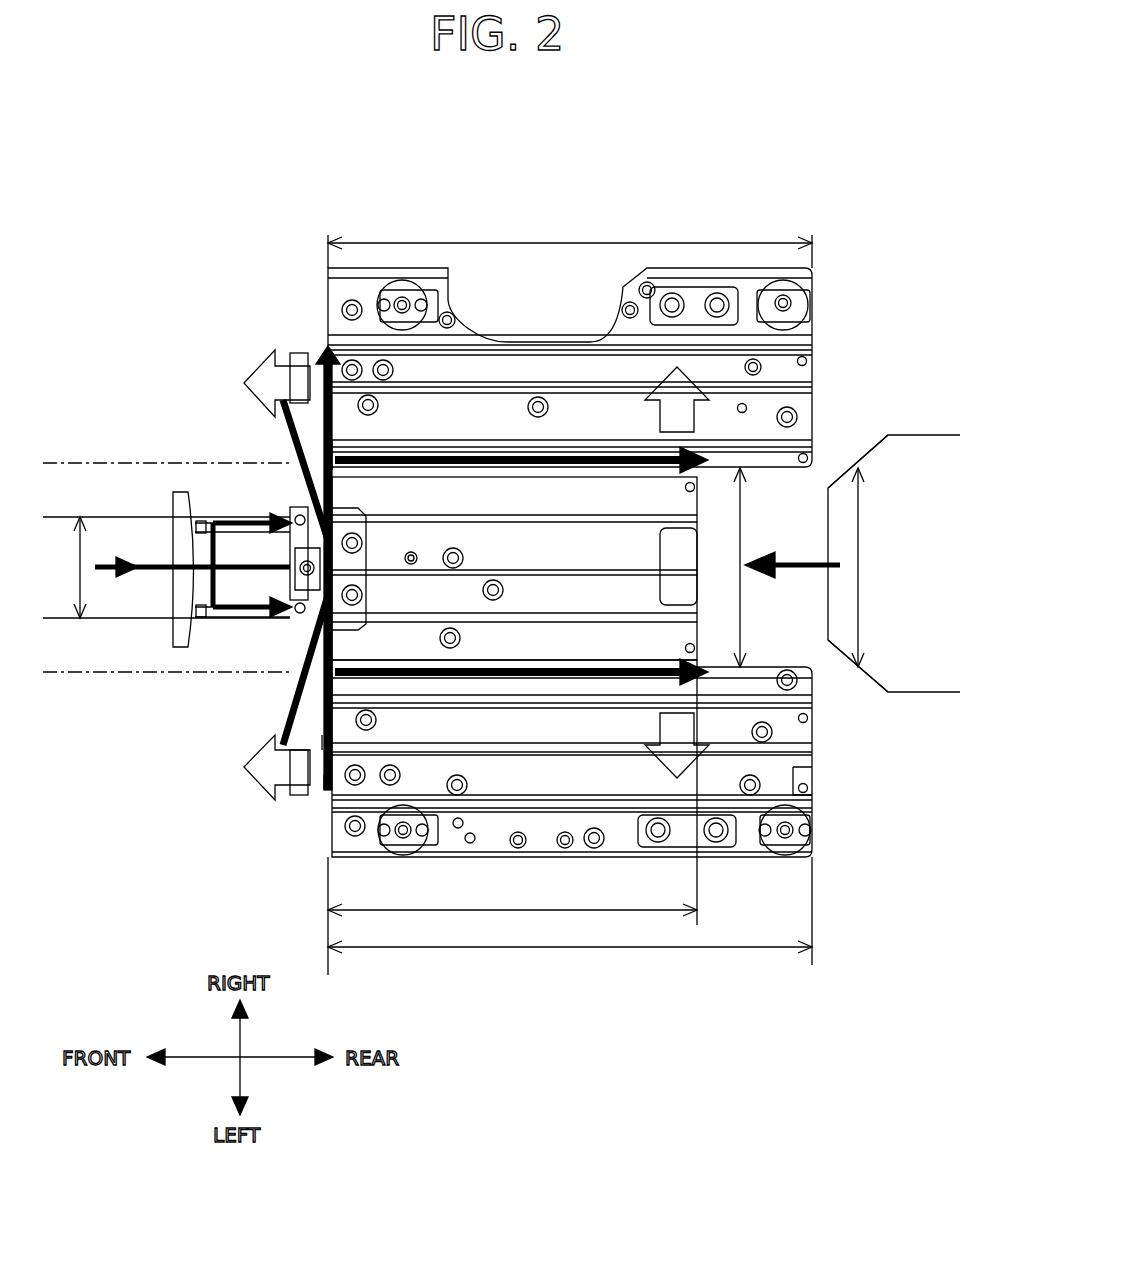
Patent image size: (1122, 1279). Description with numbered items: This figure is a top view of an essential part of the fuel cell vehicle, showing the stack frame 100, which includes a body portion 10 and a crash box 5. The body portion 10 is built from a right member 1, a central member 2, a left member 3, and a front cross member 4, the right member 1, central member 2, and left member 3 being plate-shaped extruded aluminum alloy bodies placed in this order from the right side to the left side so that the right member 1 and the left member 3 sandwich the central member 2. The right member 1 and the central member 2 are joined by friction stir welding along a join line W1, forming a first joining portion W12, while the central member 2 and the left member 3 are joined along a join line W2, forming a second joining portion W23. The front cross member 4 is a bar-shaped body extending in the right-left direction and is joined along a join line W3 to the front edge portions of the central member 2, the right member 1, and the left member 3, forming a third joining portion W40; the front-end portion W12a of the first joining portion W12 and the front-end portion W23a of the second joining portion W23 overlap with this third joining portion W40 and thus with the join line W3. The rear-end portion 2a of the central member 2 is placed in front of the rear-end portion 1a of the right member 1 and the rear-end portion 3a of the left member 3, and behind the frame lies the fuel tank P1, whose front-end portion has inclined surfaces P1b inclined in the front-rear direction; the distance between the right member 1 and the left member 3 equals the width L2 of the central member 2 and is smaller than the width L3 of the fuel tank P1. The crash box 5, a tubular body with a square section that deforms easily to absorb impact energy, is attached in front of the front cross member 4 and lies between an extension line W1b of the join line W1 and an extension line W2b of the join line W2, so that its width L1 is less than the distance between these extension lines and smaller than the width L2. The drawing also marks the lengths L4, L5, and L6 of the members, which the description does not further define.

The stack frame 100 is at (700, 158).
The body portion 10 is at (812, 283).
The right member 1 is at (812, 300).
The rear-end portion of the right member 1a is at (812, 360).
The central member 2 is at (675, 595).
The rear-end portion of the central member 2a is at (697, 560).
The left member 3 is at (812, 830).
The rear-end portion of the left member 3a is at (812, 792).
The front cross member 4 is at (290, 485).
The crash box 5 is at (185, 592).
The fuel tank P1 is at (905, 435).
The inclined surfaces P1b is at (855, 465).
The join line W1 is at (582, 458).
The extension line of the join line W1 W1b is at (166, 450).
The first joining portion W12 is at (548, 458).
The front-end portion of the first joining portion W12a is at (338, 465).
The join line W2 is at (567, 670).
The extension line of the join line W2 W2b is at (166, 687).
The second joining portion W23 is at (548, 670).
The front-end portion of the second joining portion W23a is at (340, 678).
The join line W3 is at (326, 780).
The third joining portion W40 is at (325, 742).
The width of the crash box L1 is at (166, 567).
The width of the central member L2 is at (752, 567).
The width of the fuel tank L3 is at (870, 567).
The length L4 is at (570, 242).
The length L5 is at (512, 821).
The length L6 is at (570, 918).